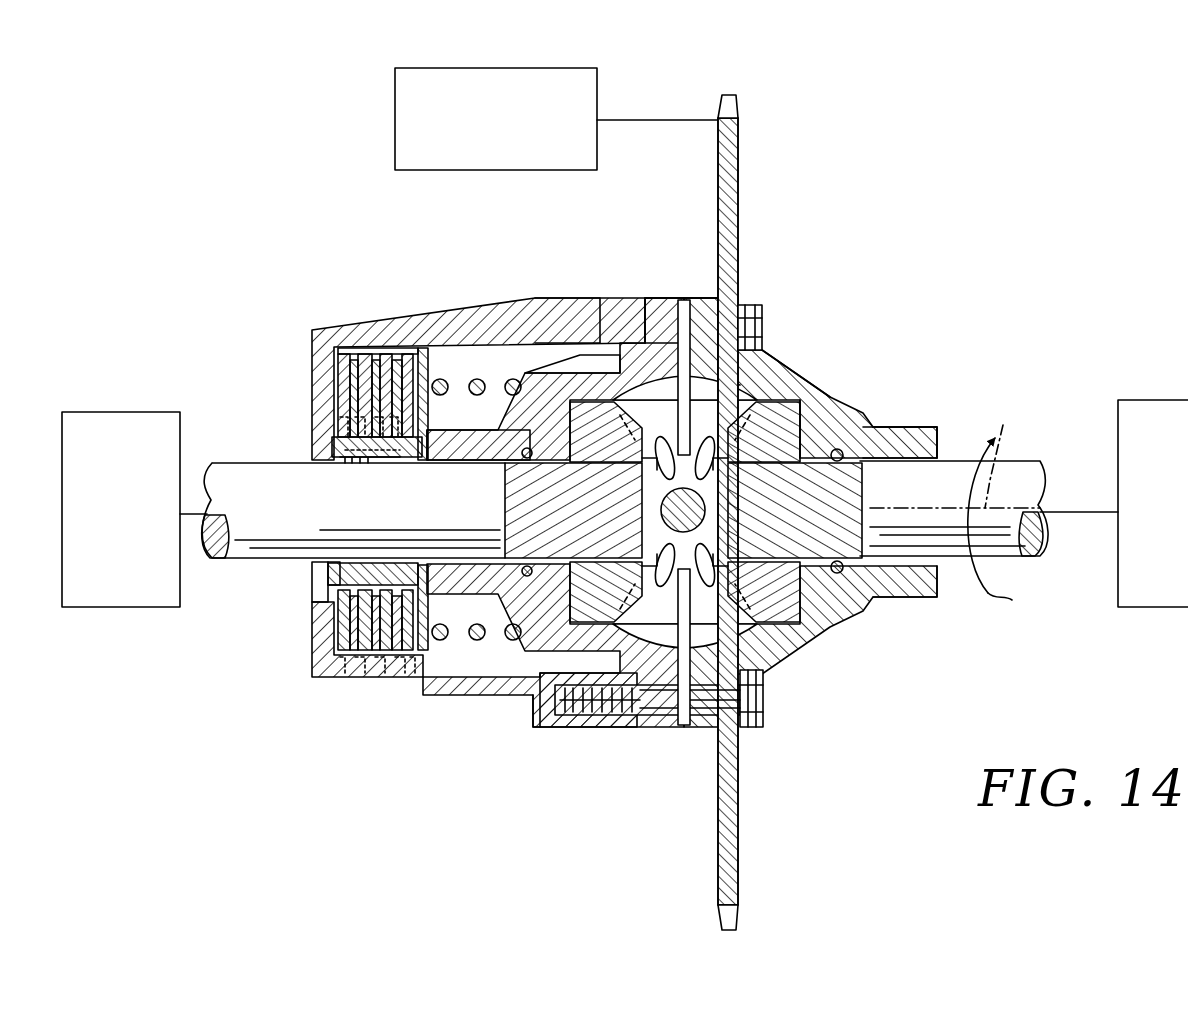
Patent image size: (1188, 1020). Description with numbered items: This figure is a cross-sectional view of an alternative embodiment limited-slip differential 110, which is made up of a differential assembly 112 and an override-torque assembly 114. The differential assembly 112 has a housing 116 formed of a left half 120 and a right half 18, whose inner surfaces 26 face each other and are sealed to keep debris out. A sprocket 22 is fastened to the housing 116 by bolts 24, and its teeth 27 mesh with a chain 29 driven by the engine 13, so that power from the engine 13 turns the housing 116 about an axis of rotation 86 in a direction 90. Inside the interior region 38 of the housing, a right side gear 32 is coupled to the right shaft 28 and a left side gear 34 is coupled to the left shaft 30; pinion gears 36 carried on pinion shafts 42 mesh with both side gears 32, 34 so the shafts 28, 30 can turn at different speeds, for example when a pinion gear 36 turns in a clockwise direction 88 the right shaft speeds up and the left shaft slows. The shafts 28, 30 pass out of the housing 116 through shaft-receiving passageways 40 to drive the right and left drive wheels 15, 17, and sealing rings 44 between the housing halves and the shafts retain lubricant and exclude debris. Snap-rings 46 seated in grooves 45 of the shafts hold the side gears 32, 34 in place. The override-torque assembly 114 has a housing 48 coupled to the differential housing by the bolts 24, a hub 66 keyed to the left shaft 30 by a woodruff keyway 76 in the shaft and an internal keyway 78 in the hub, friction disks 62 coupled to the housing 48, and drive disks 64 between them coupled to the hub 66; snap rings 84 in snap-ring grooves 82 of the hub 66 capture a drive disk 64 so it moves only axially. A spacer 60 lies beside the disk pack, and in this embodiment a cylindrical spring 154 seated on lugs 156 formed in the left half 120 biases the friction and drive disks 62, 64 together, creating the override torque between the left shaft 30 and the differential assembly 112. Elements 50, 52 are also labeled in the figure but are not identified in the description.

The engine 13 is at (496, 176).
The right drive wheel 15 is at (1161, 396).
The left drive wheel 17 is at (120, 614).
The right half 18 is at (812, 625).
The sprocket 22 is at (740, 222).
The bolts 24 is at (755, 320).
The inner surfaces 26 is at (660, 297).
The teeth 27 is at (740, 104).
The right shaft 28 is at (1013, 468).
The chain 29 is at (657, 98).
The left shaft 30 is at (226, 480).
The right side gear 32 is at (760, 412).
The left side gear 34 is at (625, 297).
The pinion gears 36 is at (763, 372).
The interior region 38 is at (660, 715).
The shaft-receiving passageways 40 is at (528, 540).
The pinion shafts 42 is at (672, 452).
The sealing rings 44 is at (833, 452).
The grooves 45 is at (648, 545).
The snap-rings 46 is at (662, 562).
The housing 48 is at (430, 315).
The housing flange 50 is at (472, 330).
The housing wall 52 is at (316, 600).
The spacer 60 is at (458, 345).
The friction disks 62 is at (330, 648).
The drive disks 64 is at (385, 350).
The hub 66 is at (316, 577).
The woodruff keyway 76 is at (367, 530).
The internal keyway 78 is at (343, 468).
The snap-ring grooves 82 is at (330, 432).
The snap rings 84 is at (330, 400).
The axis of rotation 86 is at (998, 492).
The clockwise direction 88 is at (745, 372).
The direction 90 is at (1012, 600).
The limited-slip differential 110 is at (972, 312).
The differential assembly 112 is at (643, 270).
The override-torque assembly 114 is at (585, 742).
The housing 116 is at (840, 450).
The left half 120 is at (645, 292).
The cylindrical spring 154 is at (478, 648).
The lugs 156 is at (520, 322).